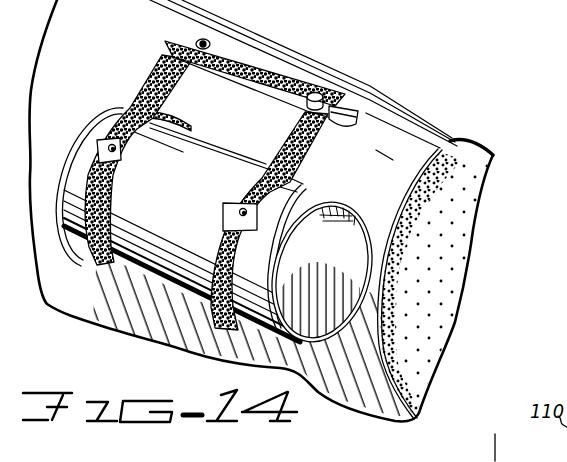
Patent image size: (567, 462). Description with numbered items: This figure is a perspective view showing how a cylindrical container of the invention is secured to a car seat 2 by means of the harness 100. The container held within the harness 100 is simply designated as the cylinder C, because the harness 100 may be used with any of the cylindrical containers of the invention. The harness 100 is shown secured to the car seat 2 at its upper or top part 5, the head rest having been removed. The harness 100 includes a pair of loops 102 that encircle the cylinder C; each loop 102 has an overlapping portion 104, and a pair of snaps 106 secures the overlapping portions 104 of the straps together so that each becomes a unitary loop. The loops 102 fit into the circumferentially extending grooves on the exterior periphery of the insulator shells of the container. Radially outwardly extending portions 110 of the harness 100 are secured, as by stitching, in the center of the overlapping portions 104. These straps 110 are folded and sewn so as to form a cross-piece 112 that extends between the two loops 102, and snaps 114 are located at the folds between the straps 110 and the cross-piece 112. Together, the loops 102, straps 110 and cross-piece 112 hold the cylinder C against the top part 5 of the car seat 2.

The car seat 2 is at (470, 208).
The upper or top part 5 is at (420, 116).
The harness 100 is at (218, 177).
The loops 102 is at (230, 314).
The overlapping portion 104 is at (134, 118).
The snaps 106 is at (108, 150).
The radially outwardly extending portions 110 is at (299, 156).
The cross-piece 112 is at (274, 72).
The snaps 114 is at (322, 93).
The cylinder C is at (158, 272).